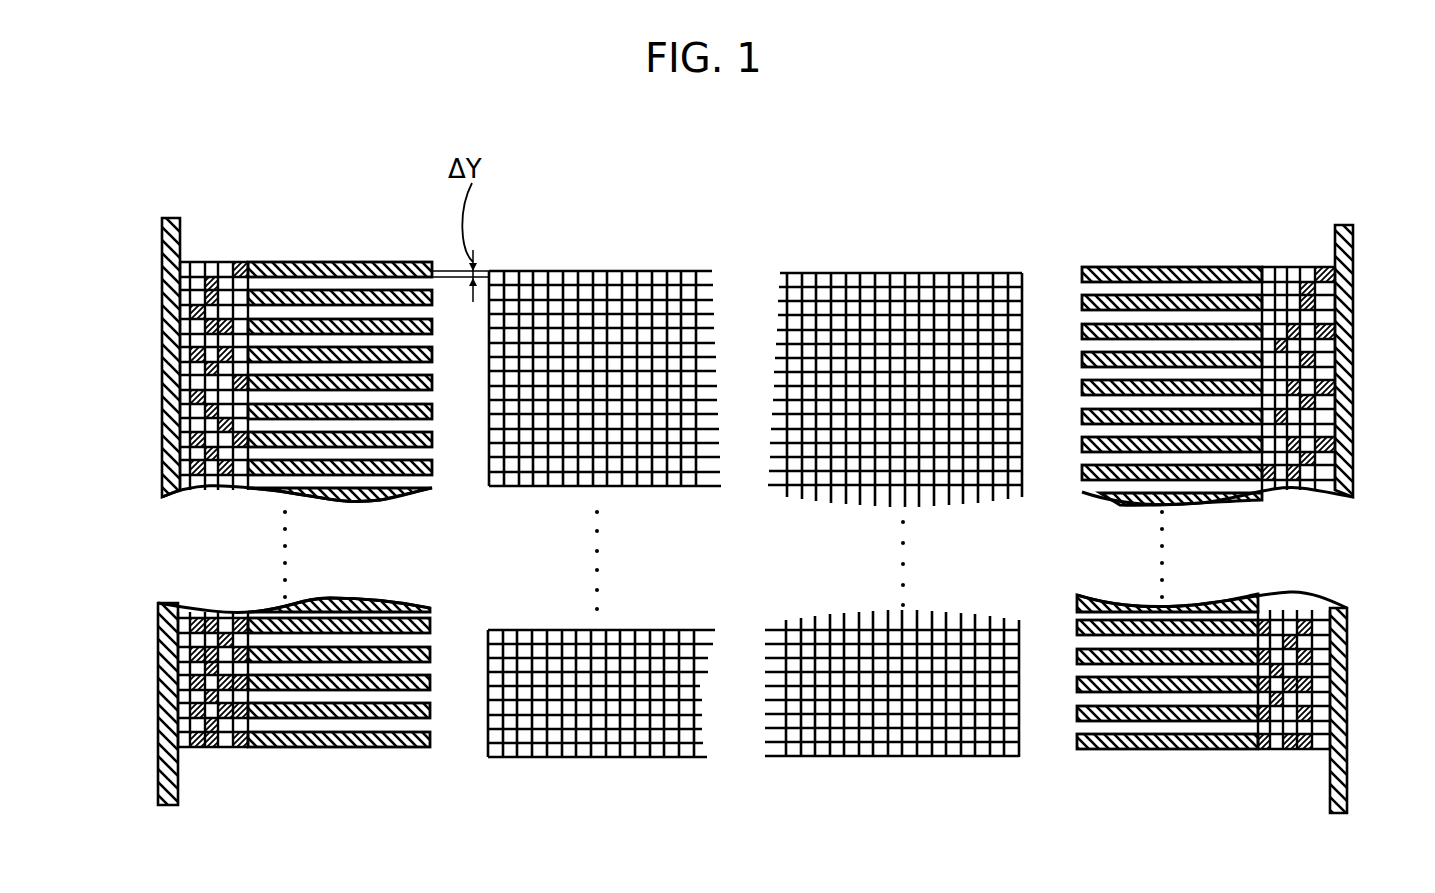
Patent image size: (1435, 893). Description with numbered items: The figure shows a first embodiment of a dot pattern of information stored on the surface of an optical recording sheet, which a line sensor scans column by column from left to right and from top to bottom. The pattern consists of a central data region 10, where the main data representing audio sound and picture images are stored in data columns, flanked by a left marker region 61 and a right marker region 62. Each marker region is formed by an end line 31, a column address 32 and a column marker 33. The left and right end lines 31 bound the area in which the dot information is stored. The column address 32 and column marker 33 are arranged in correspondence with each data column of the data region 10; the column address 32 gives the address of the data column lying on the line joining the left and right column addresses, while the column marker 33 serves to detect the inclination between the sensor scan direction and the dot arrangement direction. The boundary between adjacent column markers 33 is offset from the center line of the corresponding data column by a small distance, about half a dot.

The data region 10 is at (1022, 195).
The end line 31 is at (160, 310).
The column address 32 is at (250, 255).
The column marker 33 is at (432, 255).
The left marker region 61 is at (432, 193).
The right marker region 62 is at (1352, 198).